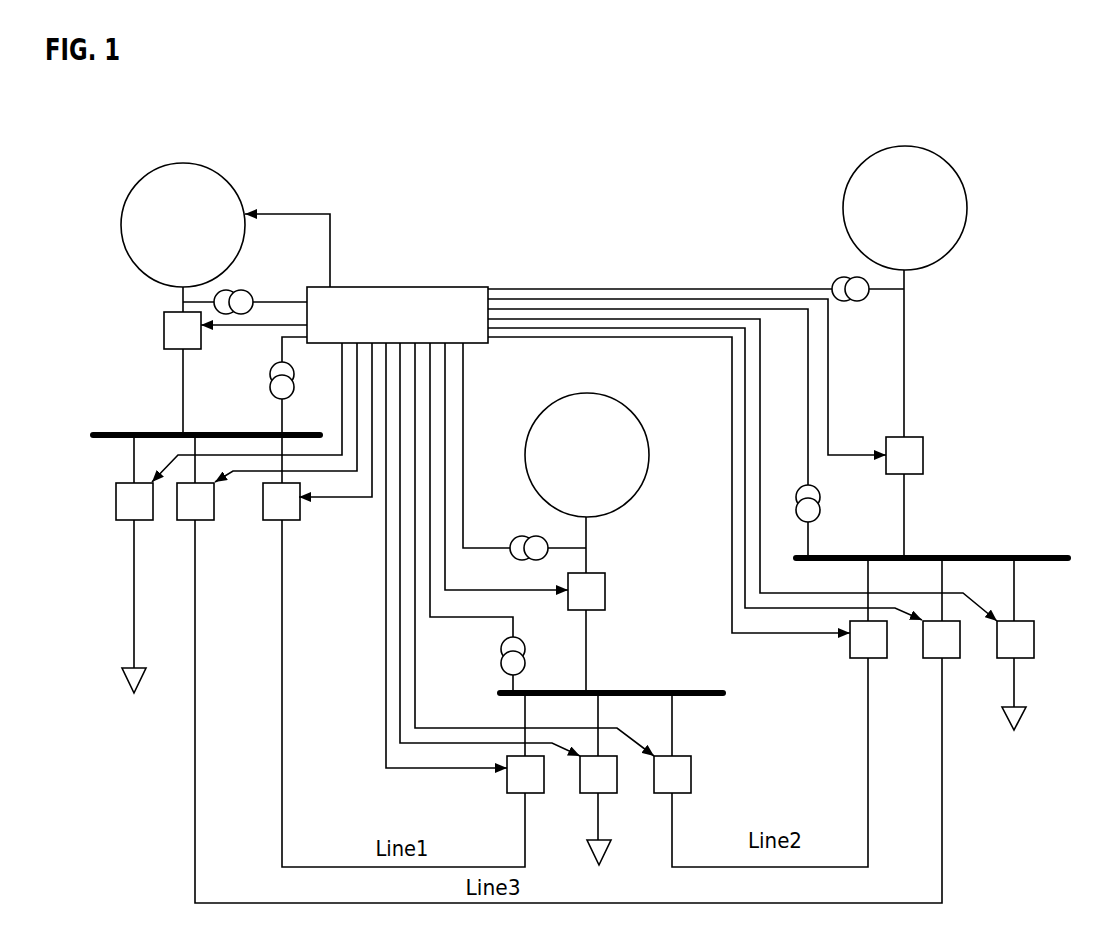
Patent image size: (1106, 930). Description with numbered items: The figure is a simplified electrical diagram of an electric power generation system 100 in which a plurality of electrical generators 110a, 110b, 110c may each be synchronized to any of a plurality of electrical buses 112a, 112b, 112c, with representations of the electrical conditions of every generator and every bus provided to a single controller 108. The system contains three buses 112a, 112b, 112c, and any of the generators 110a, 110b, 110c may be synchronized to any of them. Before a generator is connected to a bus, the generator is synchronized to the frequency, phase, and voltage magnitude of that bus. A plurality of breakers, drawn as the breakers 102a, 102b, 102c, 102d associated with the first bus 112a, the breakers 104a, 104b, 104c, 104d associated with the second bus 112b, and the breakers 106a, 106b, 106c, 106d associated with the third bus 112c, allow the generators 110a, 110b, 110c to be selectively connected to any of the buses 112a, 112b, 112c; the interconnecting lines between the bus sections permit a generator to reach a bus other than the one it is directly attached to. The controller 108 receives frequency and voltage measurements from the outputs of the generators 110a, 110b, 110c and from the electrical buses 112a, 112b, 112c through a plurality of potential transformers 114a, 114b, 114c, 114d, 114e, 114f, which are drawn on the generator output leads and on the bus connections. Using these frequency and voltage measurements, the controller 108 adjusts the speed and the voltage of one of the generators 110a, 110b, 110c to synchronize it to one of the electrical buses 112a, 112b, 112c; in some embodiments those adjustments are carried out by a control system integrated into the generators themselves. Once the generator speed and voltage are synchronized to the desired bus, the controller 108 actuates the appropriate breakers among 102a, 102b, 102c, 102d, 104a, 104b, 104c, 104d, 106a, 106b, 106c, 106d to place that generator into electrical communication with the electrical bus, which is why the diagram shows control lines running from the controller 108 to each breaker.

The electric power generation system 100 is at (370, 132).
The controller 108 is at (402, 287).
The electrical generator 110a is at (120, 228).
The electrical generator 110b is at (639, 419).
The electrical generator 110c is at (967, 208).
The breaker 102a is at (164, 333).
The breaker 102b is at (122, 522).
The breaker 102c is at (185, 522).
The breaker 102d is at (268, 522).
The breaker 104a is at (605, 597).
The breaker 104b is at (507, 795).
The breaker 104c is at (580, 795).
The breaker 104d is at (654, 795).
The breaker 106a is at (923, 458).
The breaker 106b is at (855, 660).
The breaker 106c is at (928, 660).
The breaker 106d is at (1000, 660).
The electrical bus 112a is at (93, 438).
The electrical bus 112b is at (723, 696).
The electrical bus 112c is at (1068, 560).
The potential transformer 114a is at (248, 290).
The potential transformer 114b is at (270, 375).
The potential transformer 114c is at (520, 537).
The potential transformer 114d is at (502, 650).
The potential transformer 114e is at (836, 282).
The potential transformer 114f is at (820, 502).